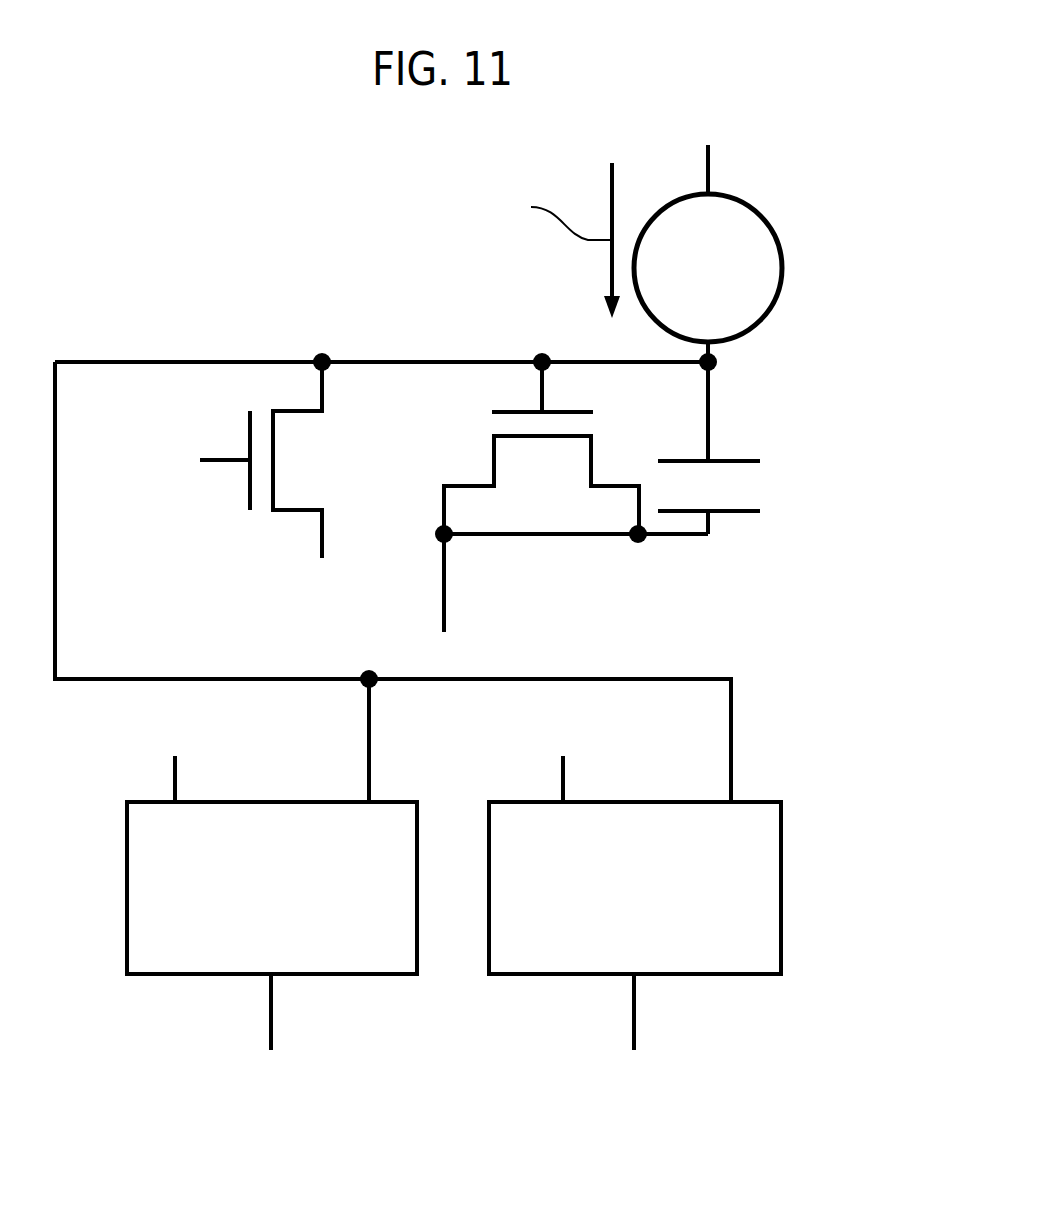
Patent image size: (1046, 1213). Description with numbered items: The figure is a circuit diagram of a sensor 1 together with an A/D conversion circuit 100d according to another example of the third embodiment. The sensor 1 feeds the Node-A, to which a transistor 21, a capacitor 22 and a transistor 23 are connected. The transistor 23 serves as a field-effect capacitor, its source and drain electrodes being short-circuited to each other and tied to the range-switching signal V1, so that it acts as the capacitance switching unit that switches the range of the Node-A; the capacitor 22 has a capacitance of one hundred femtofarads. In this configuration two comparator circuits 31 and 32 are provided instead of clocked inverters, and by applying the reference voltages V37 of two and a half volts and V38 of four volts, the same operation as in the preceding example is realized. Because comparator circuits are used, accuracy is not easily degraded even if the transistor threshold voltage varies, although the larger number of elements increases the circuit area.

The A/D conversion circuit 100d is at (264, 262).
The sensor 1 is at (782, 252).
The transistor 21 is at (302, 457).
The capacitor 22 is at (770, 488).
The transistor 23 is at (545, 465).
The comparator circuit 31 is at (751, 975).
The comparator circuit 32 is at (387, 975).